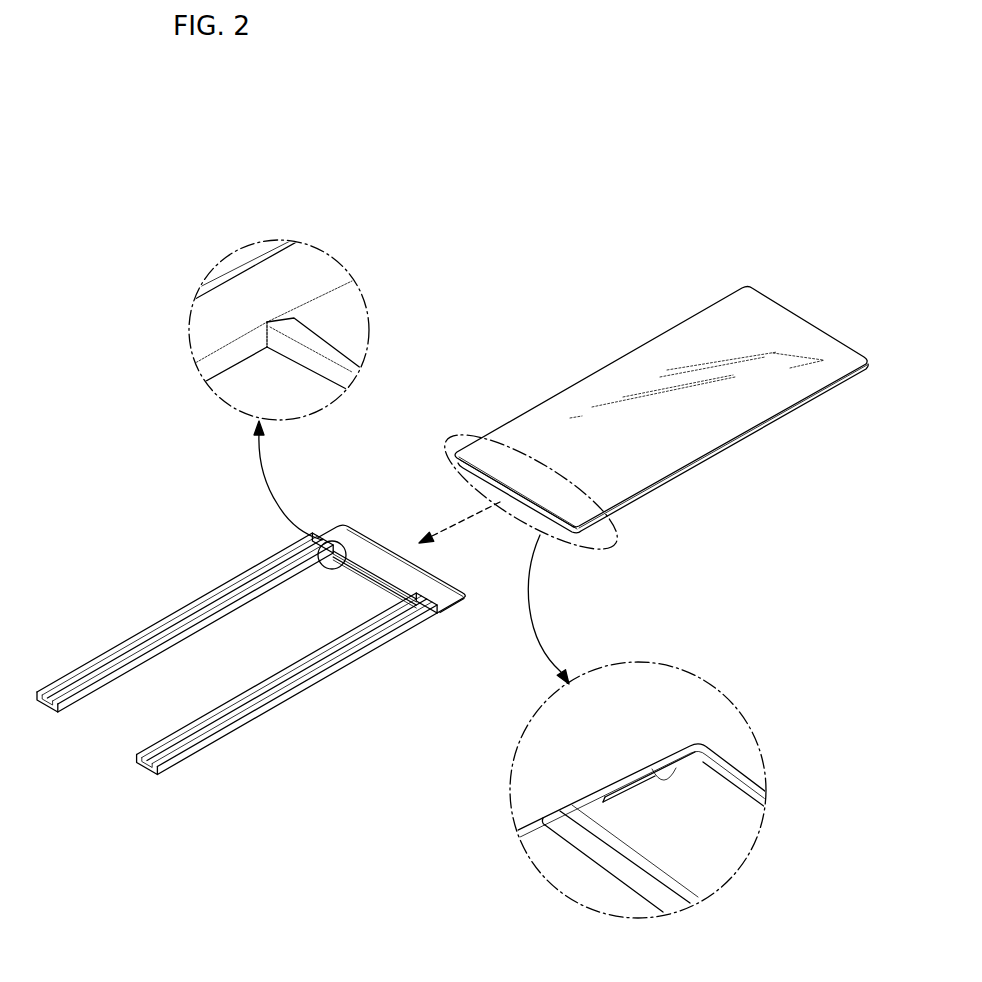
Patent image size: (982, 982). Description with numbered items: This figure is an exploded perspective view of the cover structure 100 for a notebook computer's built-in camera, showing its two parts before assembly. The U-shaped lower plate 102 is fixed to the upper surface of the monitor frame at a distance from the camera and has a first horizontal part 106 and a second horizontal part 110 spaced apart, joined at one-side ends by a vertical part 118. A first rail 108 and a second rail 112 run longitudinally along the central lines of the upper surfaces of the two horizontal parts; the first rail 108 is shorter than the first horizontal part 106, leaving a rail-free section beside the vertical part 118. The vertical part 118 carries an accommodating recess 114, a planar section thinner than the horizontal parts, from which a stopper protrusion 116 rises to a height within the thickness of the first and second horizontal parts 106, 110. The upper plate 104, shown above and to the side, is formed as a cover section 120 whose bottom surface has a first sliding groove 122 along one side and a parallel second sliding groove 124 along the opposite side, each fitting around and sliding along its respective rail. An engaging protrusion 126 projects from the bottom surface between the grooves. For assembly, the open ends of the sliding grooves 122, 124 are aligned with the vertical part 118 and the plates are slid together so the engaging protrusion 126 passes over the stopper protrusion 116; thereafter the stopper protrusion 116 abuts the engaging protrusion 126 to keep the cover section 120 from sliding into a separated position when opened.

The cover structure 100 is at (422, 194).
The U-shaped lower plate 102 is at (220, 573).
The upper plate 104 is at (658, 325).
The first horizontal part 106 is at (203, 330).
The first rail 108 is at (133, 652).
The second horizontal part 110 is at (205, 737).
The second rail 112 is at (240, 703).
The accommodating recess 114 is at (358, 303).
The stopper protrusion 116 is at (323, 348).
The vertical part 118 is at (388, 528).
The cover section 120 is at (714, 320).
The first sliding groove 122 is at (560, 815).
The second sliding groove 124 is at (598, 550).
The engaging protrusion 126 is at (676, 766).